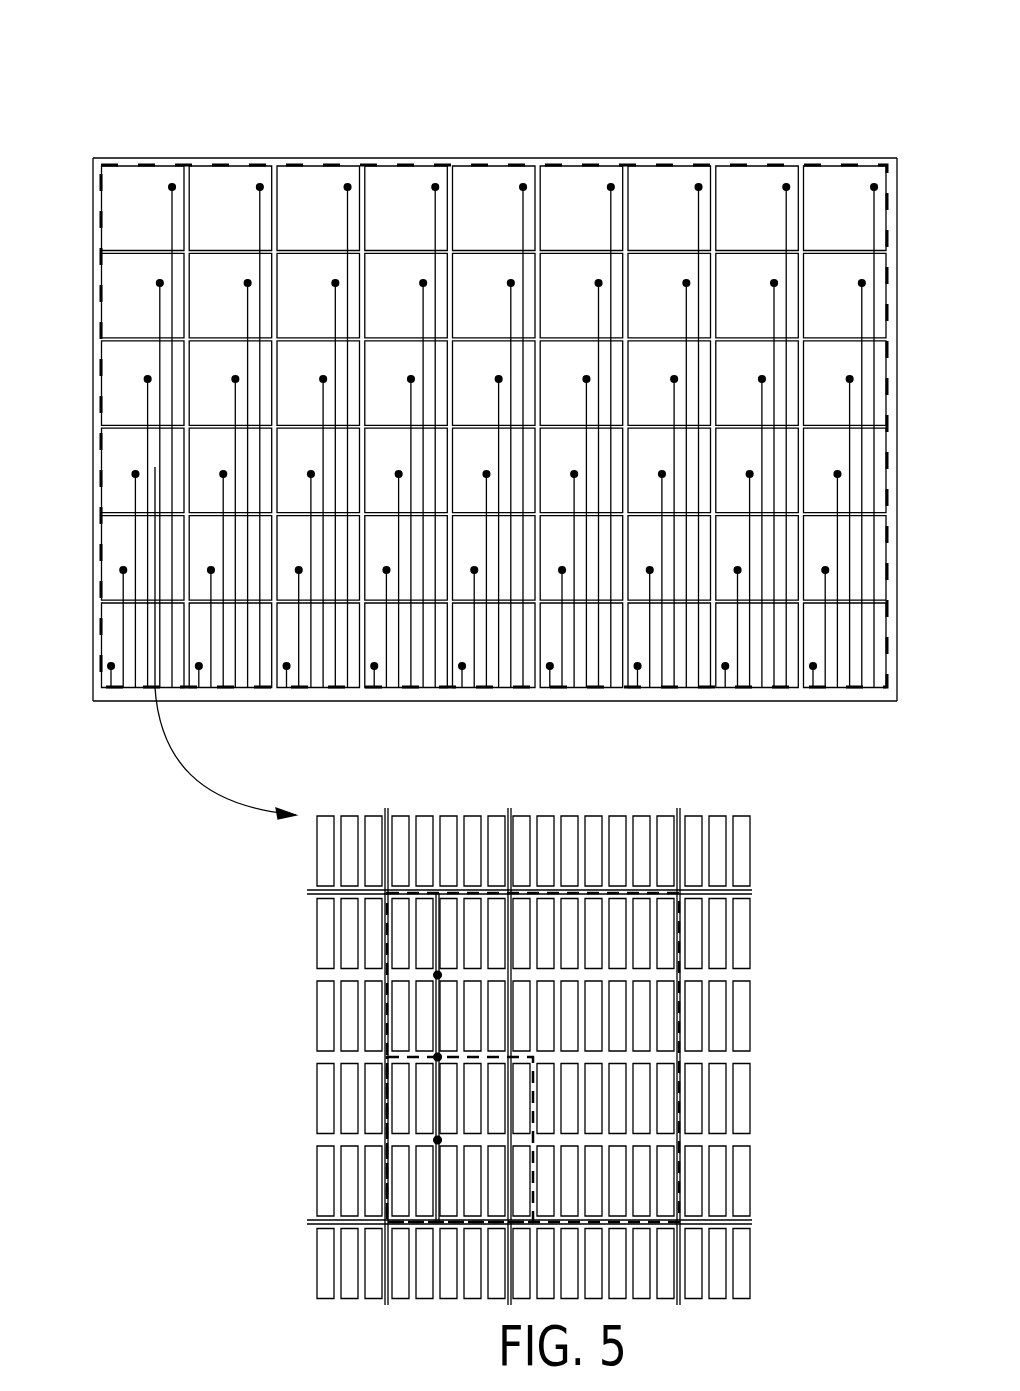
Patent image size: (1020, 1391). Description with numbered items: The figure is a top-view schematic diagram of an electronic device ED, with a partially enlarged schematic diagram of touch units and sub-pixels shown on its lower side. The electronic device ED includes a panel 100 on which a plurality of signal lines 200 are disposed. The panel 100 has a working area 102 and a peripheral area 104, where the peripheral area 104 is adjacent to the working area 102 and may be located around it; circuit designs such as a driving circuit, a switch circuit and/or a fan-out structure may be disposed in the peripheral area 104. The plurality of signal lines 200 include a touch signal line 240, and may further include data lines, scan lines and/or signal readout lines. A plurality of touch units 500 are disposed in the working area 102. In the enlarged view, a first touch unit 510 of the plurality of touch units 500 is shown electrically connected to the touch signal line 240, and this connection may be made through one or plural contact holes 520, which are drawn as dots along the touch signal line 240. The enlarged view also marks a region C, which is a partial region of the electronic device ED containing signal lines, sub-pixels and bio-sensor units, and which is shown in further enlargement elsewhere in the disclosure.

The electronic device ED is at (795, 79).
The panel 100 is at (690, 157).
The working area 102 is at (840, 165).
The peripheral area 104 is at (856, 701).
The signal lines 200 is at (525, 228).
The touch signal line 240 is at (133, 495).
The touch units 500 is at (222, 189).
The first touch unit 510 is at (770, 922).
The contact hole 520 is at (133, 474).
The region C is at (535, 1140).